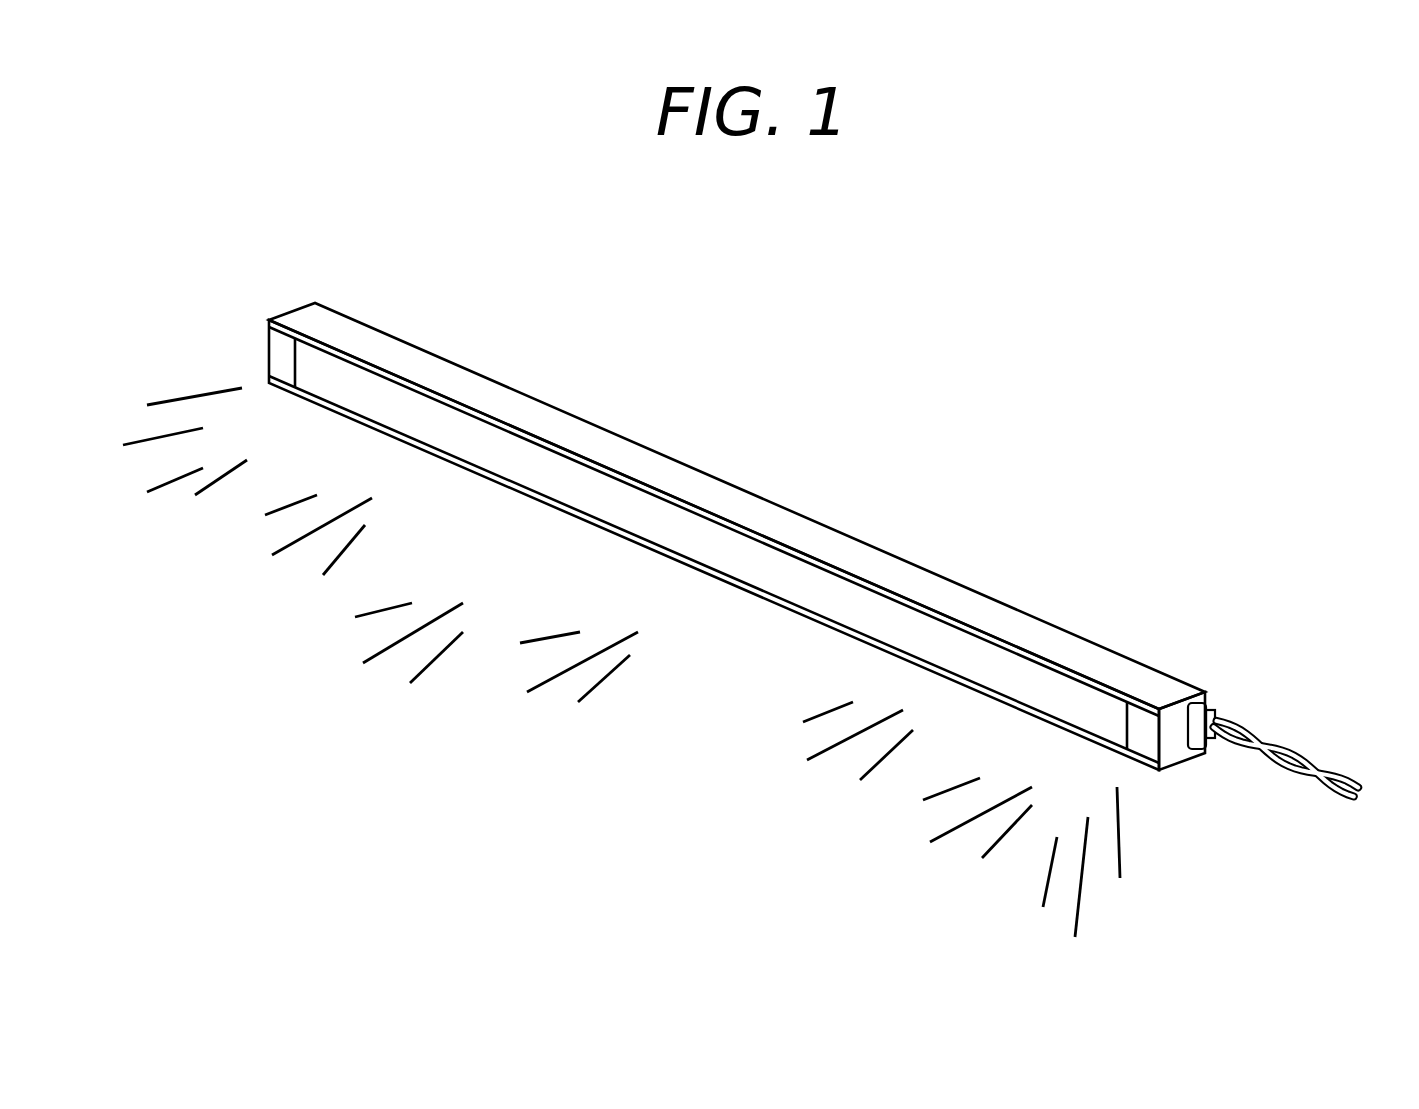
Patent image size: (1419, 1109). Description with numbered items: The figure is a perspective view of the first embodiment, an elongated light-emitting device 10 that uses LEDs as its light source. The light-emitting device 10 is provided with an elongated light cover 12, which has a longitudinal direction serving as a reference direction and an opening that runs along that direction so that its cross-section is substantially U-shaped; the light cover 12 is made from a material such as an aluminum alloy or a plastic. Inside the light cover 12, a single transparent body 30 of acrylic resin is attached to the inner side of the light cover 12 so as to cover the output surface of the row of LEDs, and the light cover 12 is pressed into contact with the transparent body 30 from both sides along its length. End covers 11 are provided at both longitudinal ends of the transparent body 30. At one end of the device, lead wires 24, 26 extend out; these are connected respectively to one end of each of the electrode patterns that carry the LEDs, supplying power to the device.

The light-emitting device 10 is at (1092, 463).
The end cover 11 is at (277, 365).
The light cover 12 is at (852, 566).
The lead wire 24 is at (1318, 768).
The lead wire 26 is at (1285, 778).
The transparent body 30 is at (773, 563).